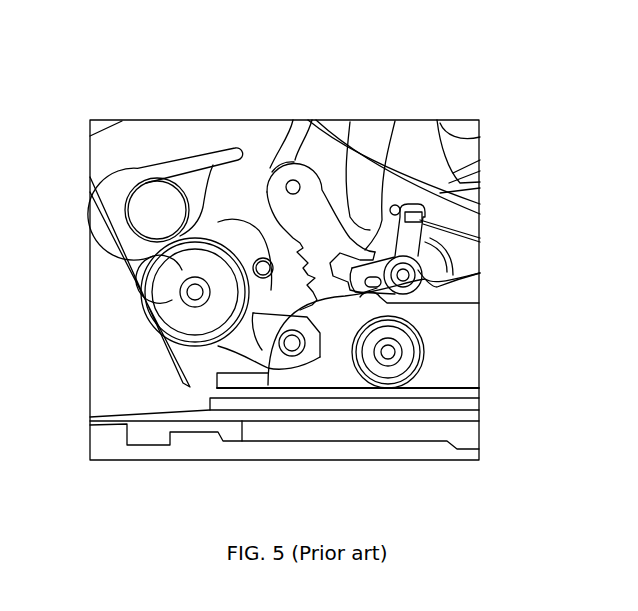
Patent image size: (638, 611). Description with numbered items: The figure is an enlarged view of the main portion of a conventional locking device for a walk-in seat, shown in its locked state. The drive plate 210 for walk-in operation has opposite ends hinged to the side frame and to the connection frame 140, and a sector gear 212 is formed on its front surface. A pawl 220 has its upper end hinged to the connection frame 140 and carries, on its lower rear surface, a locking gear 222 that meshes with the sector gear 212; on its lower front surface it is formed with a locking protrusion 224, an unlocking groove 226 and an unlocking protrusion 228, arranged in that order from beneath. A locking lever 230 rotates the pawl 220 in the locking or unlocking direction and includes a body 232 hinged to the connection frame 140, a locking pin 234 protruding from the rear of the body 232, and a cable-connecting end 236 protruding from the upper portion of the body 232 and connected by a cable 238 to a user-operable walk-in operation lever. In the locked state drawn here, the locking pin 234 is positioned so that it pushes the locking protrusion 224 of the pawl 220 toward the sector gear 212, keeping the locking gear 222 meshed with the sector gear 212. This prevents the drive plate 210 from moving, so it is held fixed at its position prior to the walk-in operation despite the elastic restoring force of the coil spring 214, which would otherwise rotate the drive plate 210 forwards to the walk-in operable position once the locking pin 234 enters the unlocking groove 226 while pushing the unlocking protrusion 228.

The connection frame 140 is at (262, 152).
The drive plate 210 is at (214, 166).
The sector gear 212 is at (297, 290).
The coil spring 214 is at (142, 310).
The pawl 220 is at (315, 160).
The locking gear 222 is at (301, 358).
The locking protrusion 224 is at (338, 305).
The unlocking groove 226 is at (344, 155).
The unlocking protrusion 228 is at (375, 185).
The locking lever 230 is at (456, 192).
The body 232 is at (440, 292).
The locking pin 234 is at (375, 385).
The cable-connecting end 236 is at (437, 190).
The cable 238 is at (465, 231).